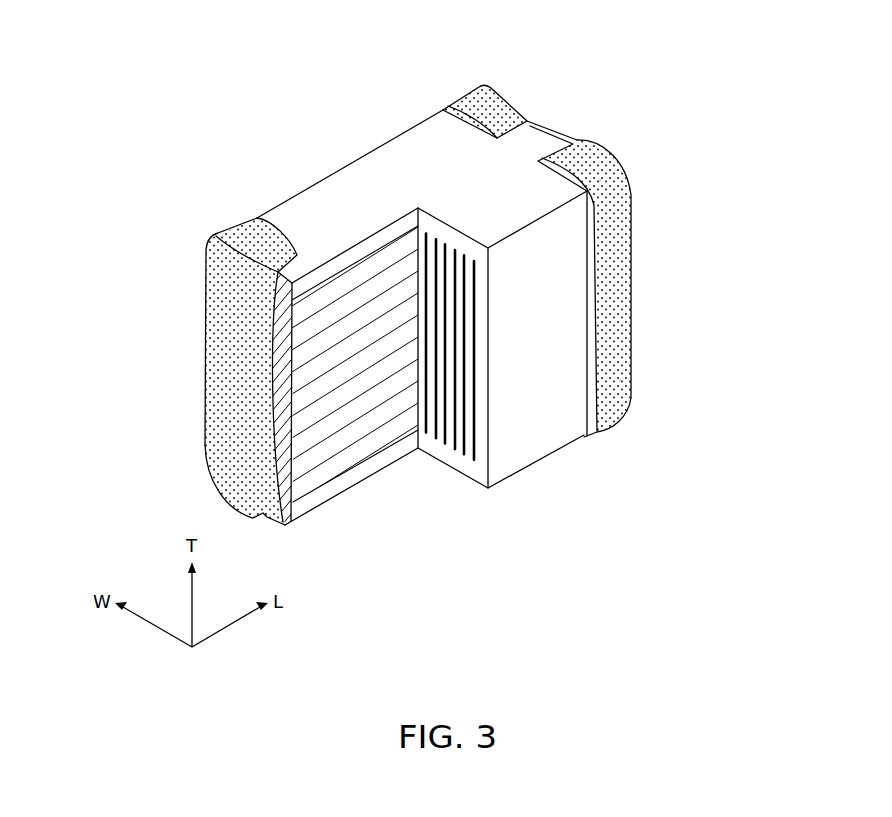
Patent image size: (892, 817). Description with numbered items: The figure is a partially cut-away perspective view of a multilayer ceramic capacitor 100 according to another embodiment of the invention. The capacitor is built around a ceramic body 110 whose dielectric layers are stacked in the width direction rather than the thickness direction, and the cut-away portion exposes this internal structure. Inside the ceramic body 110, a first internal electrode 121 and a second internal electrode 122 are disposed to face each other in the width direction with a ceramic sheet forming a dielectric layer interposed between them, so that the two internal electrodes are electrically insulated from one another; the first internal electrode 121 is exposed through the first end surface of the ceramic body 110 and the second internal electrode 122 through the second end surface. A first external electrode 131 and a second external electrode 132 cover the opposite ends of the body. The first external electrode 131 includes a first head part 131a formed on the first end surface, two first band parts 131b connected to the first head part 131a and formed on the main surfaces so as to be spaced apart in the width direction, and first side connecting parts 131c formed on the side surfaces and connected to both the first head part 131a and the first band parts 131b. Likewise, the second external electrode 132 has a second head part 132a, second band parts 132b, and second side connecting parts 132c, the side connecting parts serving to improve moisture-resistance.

The multilayer ceramic capacitor 100 is at (412, 48).
The ceramic body 110 is at (280, 189).
The first internal electrode 121 is at (358, 447).
The second internal electrode 122 is at (435, 437).
The first external electrode 131 is at (128, 325).
The first head part 131a is at (240, 377).
The first band part 131b is at (247, 232).
The first side connecting part 131c is at (240, 422).
The second external electrode 132 is at (765, 178).
The second head part 132a is at (620, 251).
The second band part 132b is at (588, 155).
The second side connecting part 132c is at (623, 370).